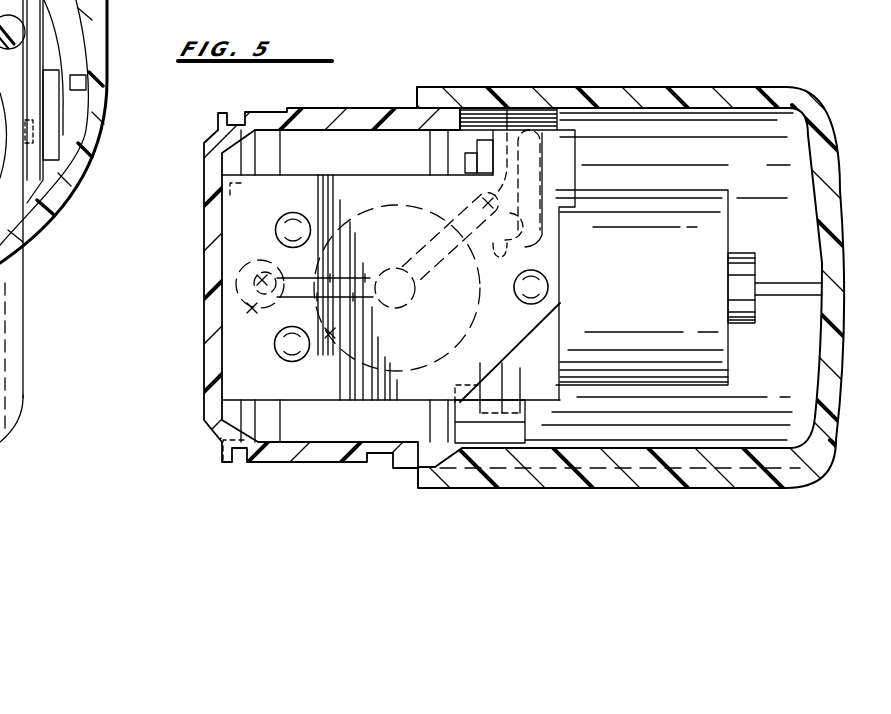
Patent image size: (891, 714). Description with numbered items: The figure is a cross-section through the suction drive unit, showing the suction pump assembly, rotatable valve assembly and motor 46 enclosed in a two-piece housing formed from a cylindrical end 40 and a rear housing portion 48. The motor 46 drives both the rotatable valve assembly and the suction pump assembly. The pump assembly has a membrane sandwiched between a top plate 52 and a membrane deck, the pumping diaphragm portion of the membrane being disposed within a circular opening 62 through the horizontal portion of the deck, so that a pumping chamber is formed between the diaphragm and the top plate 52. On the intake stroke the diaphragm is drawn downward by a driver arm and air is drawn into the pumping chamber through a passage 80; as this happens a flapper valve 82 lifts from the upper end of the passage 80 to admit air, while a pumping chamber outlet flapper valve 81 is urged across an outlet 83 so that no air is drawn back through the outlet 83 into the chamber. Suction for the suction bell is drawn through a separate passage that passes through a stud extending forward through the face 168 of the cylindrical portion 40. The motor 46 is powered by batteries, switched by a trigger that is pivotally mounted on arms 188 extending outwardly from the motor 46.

In FIG. 3, the rear housing portion 48 is at (68, 207).
In FIG. 5, the rear housing portion 48 is at (716, 90).
In FIG. 5, the motor 46 is at (683, 190).
In FIG. 5, the top plate 52 is at (230, 217).
In FIG. 5, the passage 80 is at (233, 271).
In FIG. 5, the pumping chamber outlet flapper valve 81 is at (478, 200).
In FIG. 5, the flapper valve 82 is at (247, 315).
In FIG. 5, the outlet 83 is at (525, 247).
In FIG. 5, the circular opening 62 is at (312, 376).
In FIG. 3, the face 168 is at (175, 0).
In FIG. 5, the face 168 is at (202, 355).
In FIG. 5, the cylindrical end 40 is at (327, 458).
In FIG. 3, the arms 188 is at (57, 118).